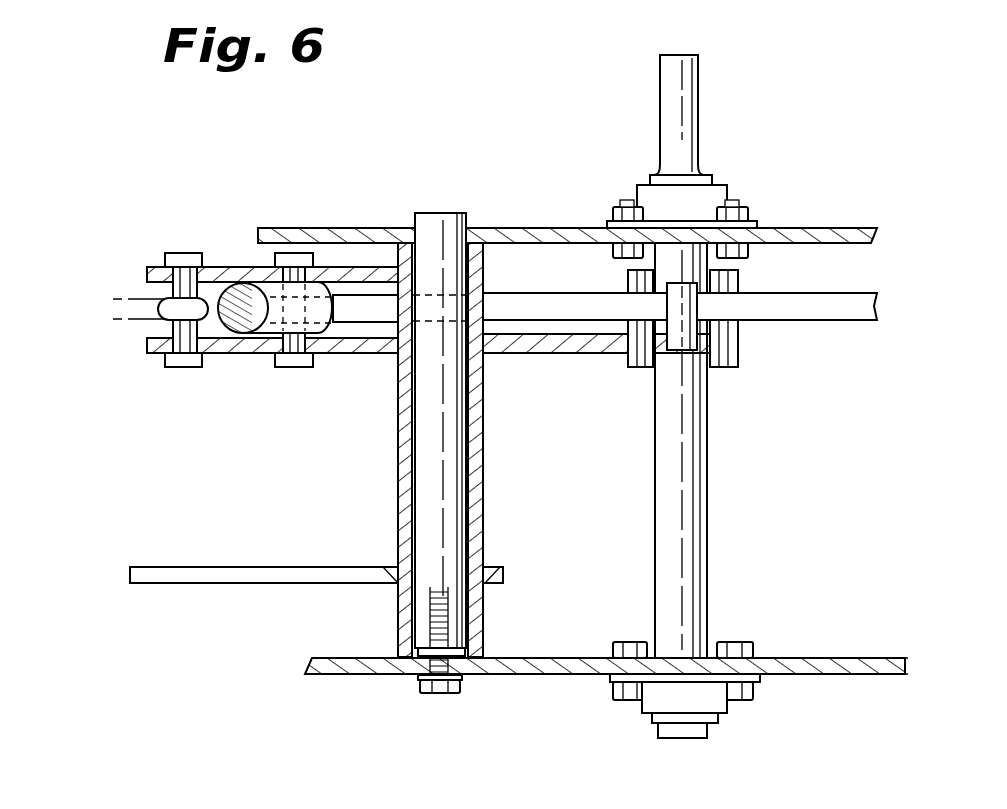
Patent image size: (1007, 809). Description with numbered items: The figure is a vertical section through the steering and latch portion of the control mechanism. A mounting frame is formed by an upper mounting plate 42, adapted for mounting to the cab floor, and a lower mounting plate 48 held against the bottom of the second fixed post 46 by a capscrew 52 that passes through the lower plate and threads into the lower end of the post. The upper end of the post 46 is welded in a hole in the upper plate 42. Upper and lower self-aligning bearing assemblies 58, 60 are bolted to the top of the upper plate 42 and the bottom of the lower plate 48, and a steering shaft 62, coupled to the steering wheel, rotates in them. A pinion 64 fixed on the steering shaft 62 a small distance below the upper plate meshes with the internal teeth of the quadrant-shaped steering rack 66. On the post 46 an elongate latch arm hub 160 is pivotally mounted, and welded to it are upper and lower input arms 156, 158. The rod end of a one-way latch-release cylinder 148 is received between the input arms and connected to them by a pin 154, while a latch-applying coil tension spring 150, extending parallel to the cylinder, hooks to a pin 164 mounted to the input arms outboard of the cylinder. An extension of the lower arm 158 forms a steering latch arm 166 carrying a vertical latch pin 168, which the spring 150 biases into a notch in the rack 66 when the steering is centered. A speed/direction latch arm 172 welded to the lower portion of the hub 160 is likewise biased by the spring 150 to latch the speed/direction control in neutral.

The upper mounting plate 42 is at (357, 228).
The second fixed post 46 is at (453, 213).
The lower mounting plate 48 is at (533, 676).
The capscrew 52 is at (435, 694).
The upper self-aligning bearing assembly 58 is at (705, 192).
The lower self-aligning bearing assembly 60 is at (718, 703).
The steering shaft 62 is at (708, 525).
The pinion 64 is at (740, 345).
The steering rack 66 is at (845, 320).
The latch-release cylinder 148 is at (232, 340).
The latch-applying coil tension spring 150 is at (122, 299).
The pin 154 is at (292, 253).
The upper input arm 156 is at (147, 278).
The lower input arm 158 is at (157, 355).
The latch arm hub 160 is at (485, 522).
The pin 164 is at (188, 253).
The steering latch arm 166 is at (575, 354).
The latch pin 168 is at (672, 365).
The speed/direction latch arm 172 is at (190, 567).